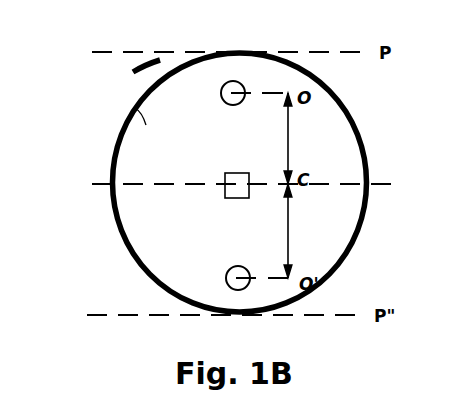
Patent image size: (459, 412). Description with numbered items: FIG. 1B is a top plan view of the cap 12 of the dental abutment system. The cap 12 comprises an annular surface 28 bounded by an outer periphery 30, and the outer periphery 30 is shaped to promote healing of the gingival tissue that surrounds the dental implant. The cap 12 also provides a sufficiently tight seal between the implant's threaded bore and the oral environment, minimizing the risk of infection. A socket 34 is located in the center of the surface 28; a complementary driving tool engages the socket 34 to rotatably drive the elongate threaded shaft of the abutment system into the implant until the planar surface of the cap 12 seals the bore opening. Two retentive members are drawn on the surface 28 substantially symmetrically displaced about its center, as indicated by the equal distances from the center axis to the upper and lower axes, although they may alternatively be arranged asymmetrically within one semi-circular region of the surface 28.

The cap 12 is at (118, 236).
The annular surface 28 is at (135, 108).
The outer periphery 30 is at (143, 97).
The socket 34 is at (225, 185).